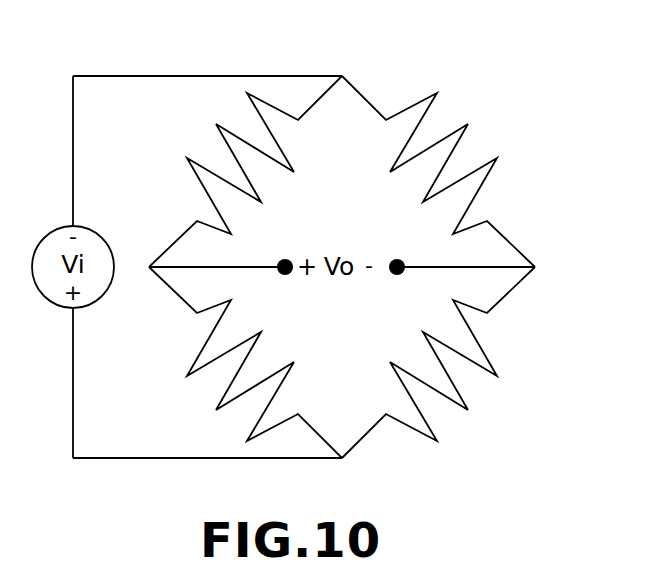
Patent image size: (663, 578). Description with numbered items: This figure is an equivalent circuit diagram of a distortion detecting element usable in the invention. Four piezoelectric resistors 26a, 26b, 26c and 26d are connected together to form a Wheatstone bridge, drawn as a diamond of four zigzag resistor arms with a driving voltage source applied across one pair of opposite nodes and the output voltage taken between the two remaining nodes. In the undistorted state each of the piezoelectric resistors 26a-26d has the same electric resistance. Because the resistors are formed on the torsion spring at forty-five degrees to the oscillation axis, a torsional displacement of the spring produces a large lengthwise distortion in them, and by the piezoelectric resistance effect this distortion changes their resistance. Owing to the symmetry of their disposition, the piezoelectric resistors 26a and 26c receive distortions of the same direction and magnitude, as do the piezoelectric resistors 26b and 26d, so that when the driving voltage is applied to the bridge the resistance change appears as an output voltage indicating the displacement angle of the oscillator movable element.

The piezoelectric resistor 26a is at (216, 124).
The piezoelectric resistor 26b is at (216, 410).
The piezoelectric resistor 26c is at (468, 410).
The piezoelectric resistor 26d is at (469, 124).